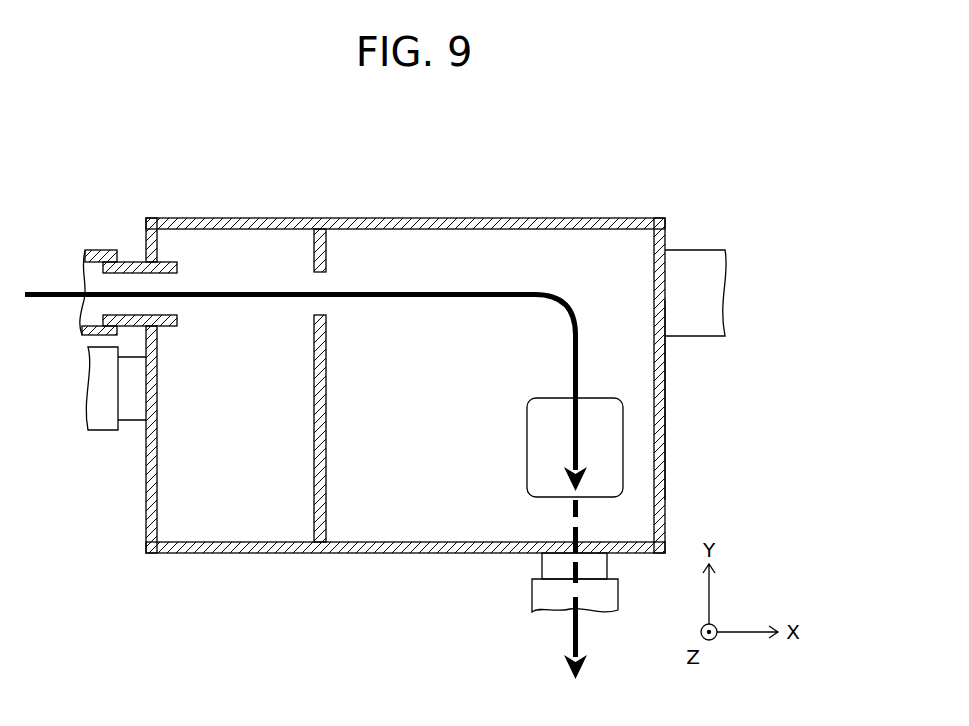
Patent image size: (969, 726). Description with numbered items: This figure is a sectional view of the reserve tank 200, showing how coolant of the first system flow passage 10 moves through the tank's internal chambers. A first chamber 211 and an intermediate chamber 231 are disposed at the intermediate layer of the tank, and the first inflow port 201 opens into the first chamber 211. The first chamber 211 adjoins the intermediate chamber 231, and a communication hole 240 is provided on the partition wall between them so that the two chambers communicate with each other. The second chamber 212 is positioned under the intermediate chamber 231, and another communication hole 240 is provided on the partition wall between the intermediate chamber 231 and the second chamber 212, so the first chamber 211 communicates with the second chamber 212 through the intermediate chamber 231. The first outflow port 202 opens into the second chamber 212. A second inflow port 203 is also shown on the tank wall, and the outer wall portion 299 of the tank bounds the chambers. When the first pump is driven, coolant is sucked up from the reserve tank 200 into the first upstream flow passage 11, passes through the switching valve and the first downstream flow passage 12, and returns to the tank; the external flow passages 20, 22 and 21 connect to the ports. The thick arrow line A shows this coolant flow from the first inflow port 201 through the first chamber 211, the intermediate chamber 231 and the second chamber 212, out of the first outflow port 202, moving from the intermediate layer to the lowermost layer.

The reserve tank 200 is at (156, 176).
The outer wall of housing 299 is at (665, 404).
The first chamber 211 is at (211, 245).
The intermediate chamber 231 is at (553, 251).
The second chamber 212 is at (605, 470).
The communication hole 240 is at (318, 276).
The first inflow port 201 is at (125, 262).
The first outflow port 202 is at (542, 565).
The second inflow port 203 is at (130, 422).
The first system flow passage 10 is at (335, 414).
The first downstream flow passage 12 is at (95, 249).
The first upstream flow passage 11 is at (532, 599).
The external device 20 is at (413, 342).
The second external device 22 is at (697, 250).
The first external device 21 is at (95, 432).
The thick arrow line A is at (53, 298).